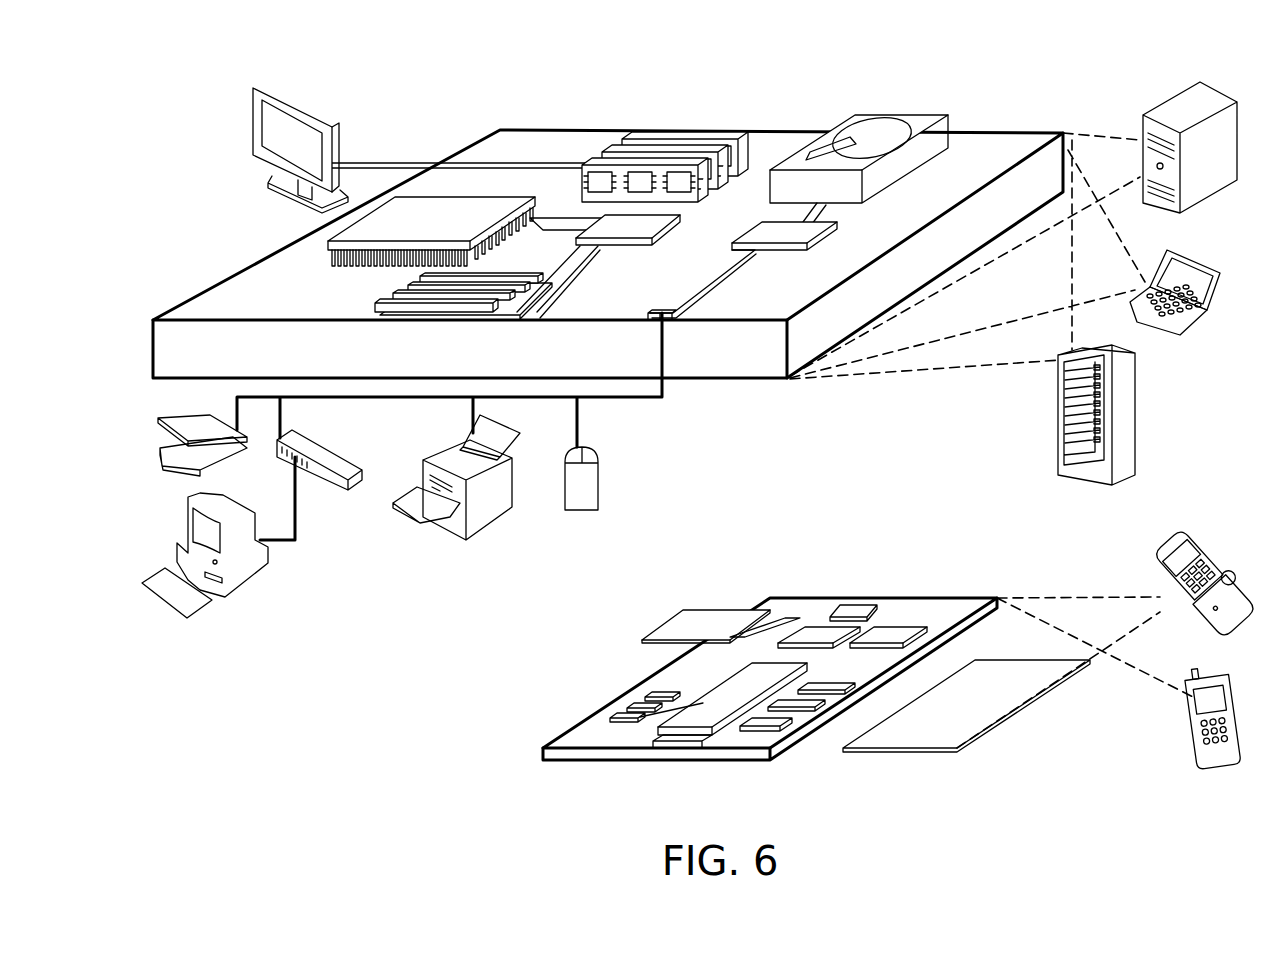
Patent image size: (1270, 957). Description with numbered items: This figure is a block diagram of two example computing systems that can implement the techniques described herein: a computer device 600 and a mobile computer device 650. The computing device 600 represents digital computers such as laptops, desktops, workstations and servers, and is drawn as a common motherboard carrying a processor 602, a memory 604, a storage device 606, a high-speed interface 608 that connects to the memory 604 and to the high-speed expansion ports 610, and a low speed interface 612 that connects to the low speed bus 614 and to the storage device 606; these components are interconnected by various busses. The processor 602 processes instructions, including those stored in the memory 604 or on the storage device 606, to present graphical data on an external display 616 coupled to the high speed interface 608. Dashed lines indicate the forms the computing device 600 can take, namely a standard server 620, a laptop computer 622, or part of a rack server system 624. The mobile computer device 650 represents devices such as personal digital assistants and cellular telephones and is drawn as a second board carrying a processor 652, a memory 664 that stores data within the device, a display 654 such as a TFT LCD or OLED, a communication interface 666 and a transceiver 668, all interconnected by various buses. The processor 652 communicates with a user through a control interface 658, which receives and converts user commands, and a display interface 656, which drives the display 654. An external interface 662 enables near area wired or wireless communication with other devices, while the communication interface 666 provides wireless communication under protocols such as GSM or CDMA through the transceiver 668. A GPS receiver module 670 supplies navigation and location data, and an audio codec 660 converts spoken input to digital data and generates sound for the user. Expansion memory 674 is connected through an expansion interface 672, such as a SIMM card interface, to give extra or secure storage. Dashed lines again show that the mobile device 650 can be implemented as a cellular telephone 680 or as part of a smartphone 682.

The computing device 600 is at (447, 110).
The processor 602 is at (328, 243).
The memory 604 is at (640, 131).
The storage device 606 is at (851, 118).
The high-speed interface 608 is at (602, 224).
The high-speed expansion ports 610 is at (392, 287).
The low speed interface 612 is at (785, 233).
The low speed bus 614 is at (672, 320).
The display 616 is at (253, 95).
The standard server 620 is at (1142, 118).
The laptop computer 622 is at (1167, 252).
The rack server system 624 is at (1058, 438).
The mobile computer device 650 is at (752, 580).
The processor 652 is at (705, 733).
The display 654 is at (960, 748).
The display interface 656 is at (778, 732).
The control interface 658 is at (810, 712).
The audio codec 660 is at (828, 692).
The external interface 662 is at (676, 748).
The memory 664 is at (628, 712).
The communication interface 666 is at (820, 620).
The transceiver 668 is at (888, 622).
The GPS receiver module 670 is at (858, 603).
The expansion interface 672 is at (743, 610).
The expansion memory 674 is at (678, 612).
The cellular telephone 680 is at (1218, 545).
The smartphone 682 is at (1200, 672).